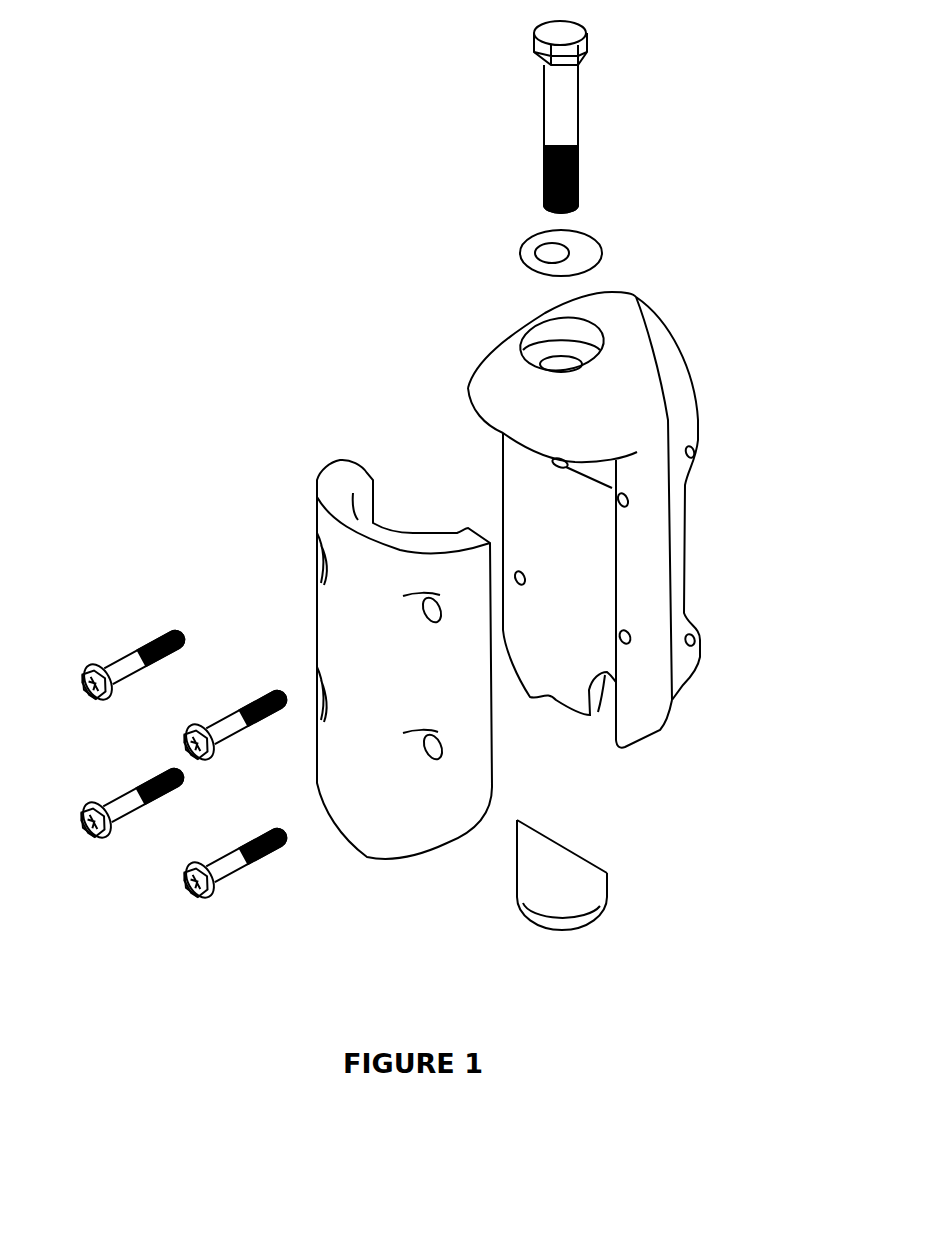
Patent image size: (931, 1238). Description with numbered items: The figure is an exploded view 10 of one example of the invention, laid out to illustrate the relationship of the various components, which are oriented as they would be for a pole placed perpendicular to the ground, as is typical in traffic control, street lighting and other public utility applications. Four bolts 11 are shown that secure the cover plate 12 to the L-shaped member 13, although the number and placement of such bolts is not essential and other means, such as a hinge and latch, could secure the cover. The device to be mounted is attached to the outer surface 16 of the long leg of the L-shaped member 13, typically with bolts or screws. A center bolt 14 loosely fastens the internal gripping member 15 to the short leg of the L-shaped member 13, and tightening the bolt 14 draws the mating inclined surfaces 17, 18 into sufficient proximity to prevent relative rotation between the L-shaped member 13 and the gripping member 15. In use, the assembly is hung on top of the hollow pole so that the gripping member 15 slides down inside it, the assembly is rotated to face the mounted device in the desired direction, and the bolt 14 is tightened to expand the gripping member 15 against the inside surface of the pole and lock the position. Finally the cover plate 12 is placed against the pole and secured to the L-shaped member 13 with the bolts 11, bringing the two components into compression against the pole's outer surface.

The exploded view 10 is at (262, 136).
The bolts 11 is at (83, 630).
The cover plate 12 is at (336, 475).
The L-shaped member 13 is at (492, 368).
The center bolt 14 is at (582, 140).
The gripping member 15 is at (594, 890).
The outer surface 16 is at (678, 423).
The inclined surface 17 is at (572, 840).
The inclined surface 18 is at (594, 492).